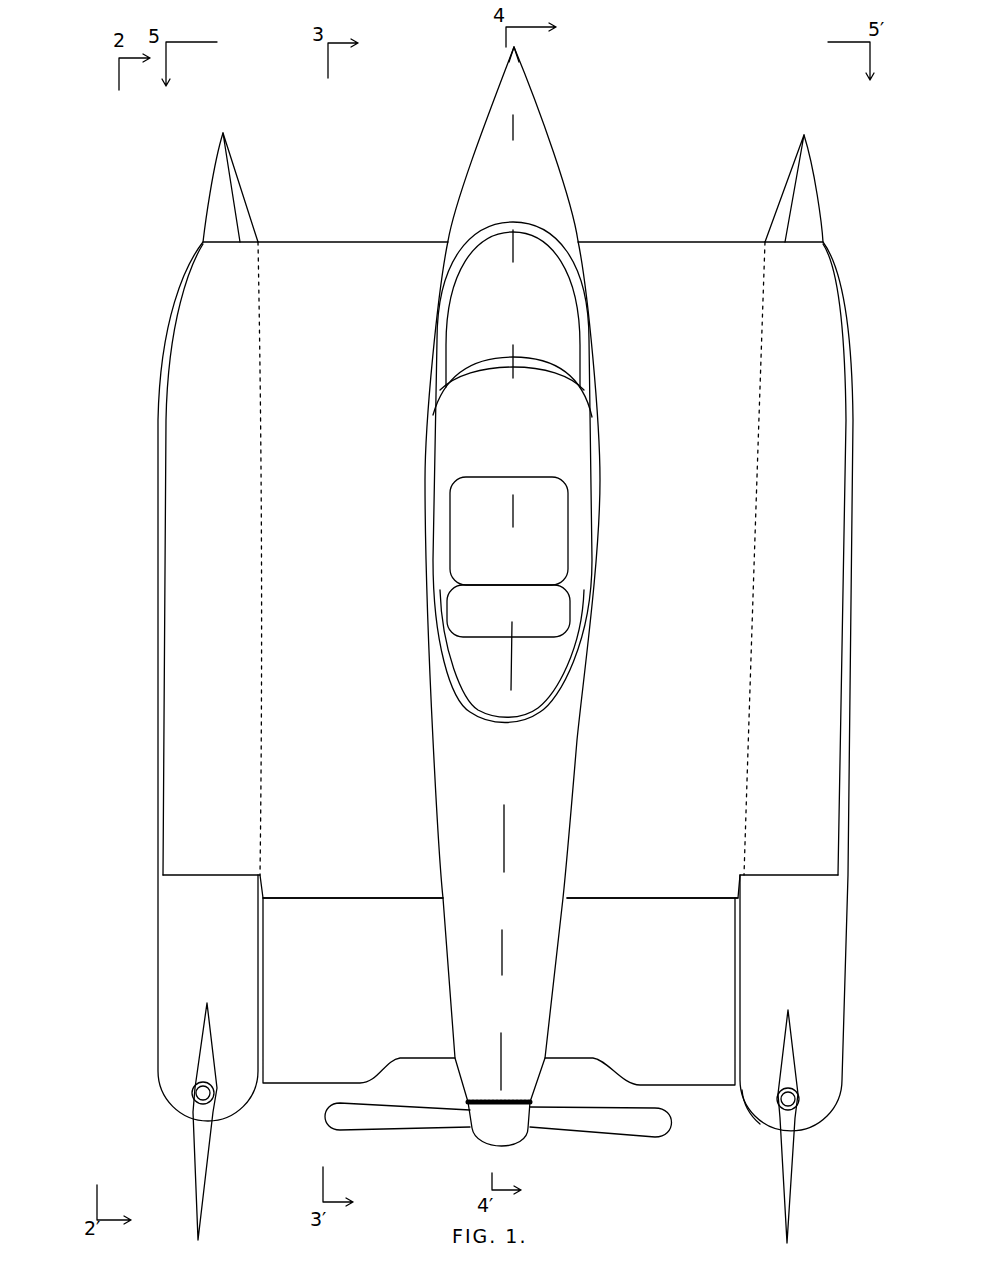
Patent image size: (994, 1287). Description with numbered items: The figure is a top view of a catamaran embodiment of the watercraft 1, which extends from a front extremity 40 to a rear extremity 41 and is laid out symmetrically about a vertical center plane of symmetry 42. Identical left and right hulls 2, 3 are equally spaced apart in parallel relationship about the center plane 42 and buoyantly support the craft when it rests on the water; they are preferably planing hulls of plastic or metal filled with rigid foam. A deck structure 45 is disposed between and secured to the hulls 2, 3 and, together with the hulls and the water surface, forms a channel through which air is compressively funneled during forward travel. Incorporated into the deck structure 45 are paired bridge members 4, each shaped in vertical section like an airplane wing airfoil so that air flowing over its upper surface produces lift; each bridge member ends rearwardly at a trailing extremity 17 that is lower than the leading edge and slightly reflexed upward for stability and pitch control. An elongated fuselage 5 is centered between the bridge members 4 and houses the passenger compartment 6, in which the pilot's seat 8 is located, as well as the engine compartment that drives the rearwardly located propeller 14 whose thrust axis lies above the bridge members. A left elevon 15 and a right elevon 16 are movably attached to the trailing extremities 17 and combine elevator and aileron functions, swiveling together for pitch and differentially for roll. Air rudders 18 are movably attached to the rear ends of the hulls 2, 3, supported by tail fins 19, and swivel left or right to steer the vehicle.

The watercraft 1 is at (884, 578).
The left hull 2 is at (198, 203).
The right hull 3 is at (832, 222).
The bridge members 4 is at (346, 496).
The fuselage 5 is at (515, 784).
The passenger compartment 6 is at (510, 460).
The pilot's seat 8 is at (521, 552).
The propeller 14 is at (594, 1135).
The left elevon 15 is at (362, 1001).
The right elevon 16 is at (653, 1001).
The trailing extremity 17 is at (352, 895).
The air rudders 18 is at (207, 1180).
The tail fins 19 is at (203, 1023).
The front extremity 40 is at (525, 48).
The rear extremity 41 is at (752, 1113).
The vertical center plane of symmetry 42 is at (506, 816).
The deck structure 45 is at (648, 195).